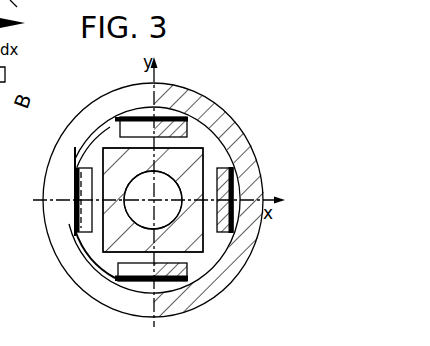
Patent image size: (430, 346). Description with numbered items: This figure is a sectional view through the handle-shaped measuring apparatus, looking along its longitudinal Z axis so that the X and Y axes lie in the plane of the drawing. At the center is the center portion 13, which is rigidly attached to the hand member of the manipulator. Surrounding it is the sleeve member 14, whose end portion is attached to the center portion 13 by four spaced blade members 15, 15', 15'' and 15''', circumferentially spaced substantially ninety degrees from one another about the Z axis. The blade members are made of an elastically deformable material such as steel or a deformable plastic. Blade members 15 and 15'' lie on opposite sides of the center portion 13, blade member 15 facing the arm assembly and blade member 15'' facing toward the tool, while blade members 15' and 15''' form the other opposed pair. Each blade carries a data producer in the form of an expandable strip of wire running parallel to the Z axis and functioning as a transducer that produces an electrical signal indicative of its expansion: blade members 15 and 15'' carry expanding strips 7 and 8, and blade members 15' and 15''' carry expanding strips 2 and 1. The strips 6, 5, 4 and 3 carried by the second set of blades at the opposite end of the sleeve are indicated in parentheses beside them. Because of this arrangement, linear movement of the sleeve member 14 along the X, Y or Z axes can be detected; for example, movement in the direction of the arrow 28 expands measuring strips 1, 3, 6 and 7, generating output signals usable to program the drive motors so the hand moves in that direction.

The arrow 28 is at (68, 94).
The center portion 13 is at (112, 148).
The sleeve member 14 is at (210, 101).
The expanding strip 1 is at (194, 94).
The expanding strip 3 is at (194, 94).
The expanding strip 2 is at (184, 301).
The expanding strip 4 is at (184, 301).
The expanding strip 8 is at (261, 181).
The expanding strip 5 is at (261, 181).
The expanding strip 7 is at (48, 226).
The expanding strip 6 is at (48, 226).
The blade member 15 is at (42, 200).
The blade member 15' is at (184, 296).
The blade member 15'' is at (255, 181).
The blade member 15''' is at (194, 113).